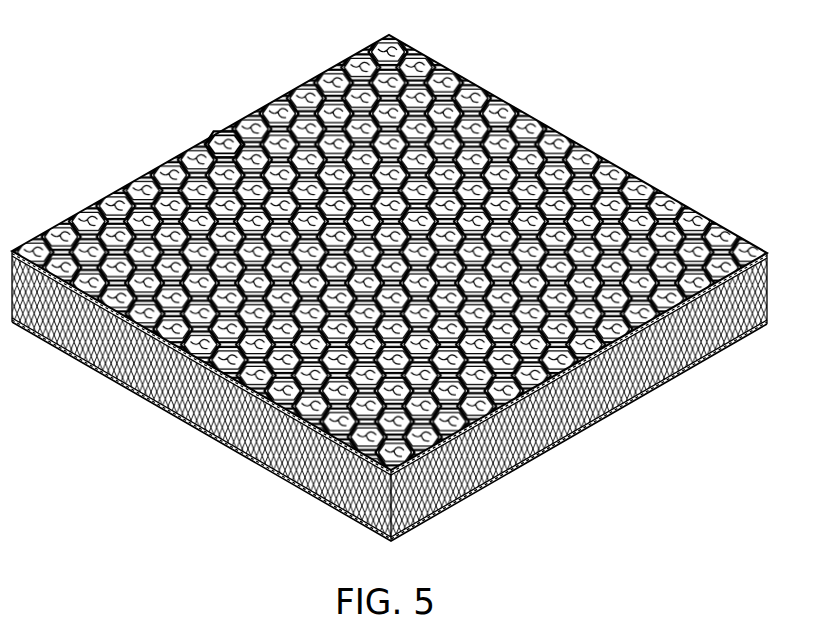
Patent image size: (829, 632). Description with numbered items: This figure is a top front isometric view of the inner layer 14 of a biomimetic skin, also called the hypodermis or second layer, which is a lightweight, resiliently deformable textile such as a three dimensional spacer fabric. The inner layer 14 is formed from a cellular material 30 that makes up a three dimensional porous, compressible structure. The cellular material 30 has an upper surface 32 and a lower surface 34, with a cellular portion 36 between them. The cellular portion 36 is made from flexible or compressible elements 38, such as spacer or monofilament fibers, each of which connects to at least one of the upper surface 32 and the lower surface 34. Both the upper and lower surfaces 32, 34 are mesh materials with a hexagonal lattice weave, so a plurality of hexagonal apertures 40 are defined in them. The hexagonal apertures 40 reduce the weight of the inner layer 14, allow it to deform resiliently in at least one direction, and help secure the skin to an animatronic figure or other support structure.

The inner layer 14 is at (401, 278).
The cellular material 30 is at (401, 278).
The upper surface 32 is at (389, 252).
The lower surface 34 is at (637, 400).
The cellular portion 36 is at (213, 403).
The compressible elements 38 is at (108, 232).
The hexagonal apertures 40 is at (227, 148).